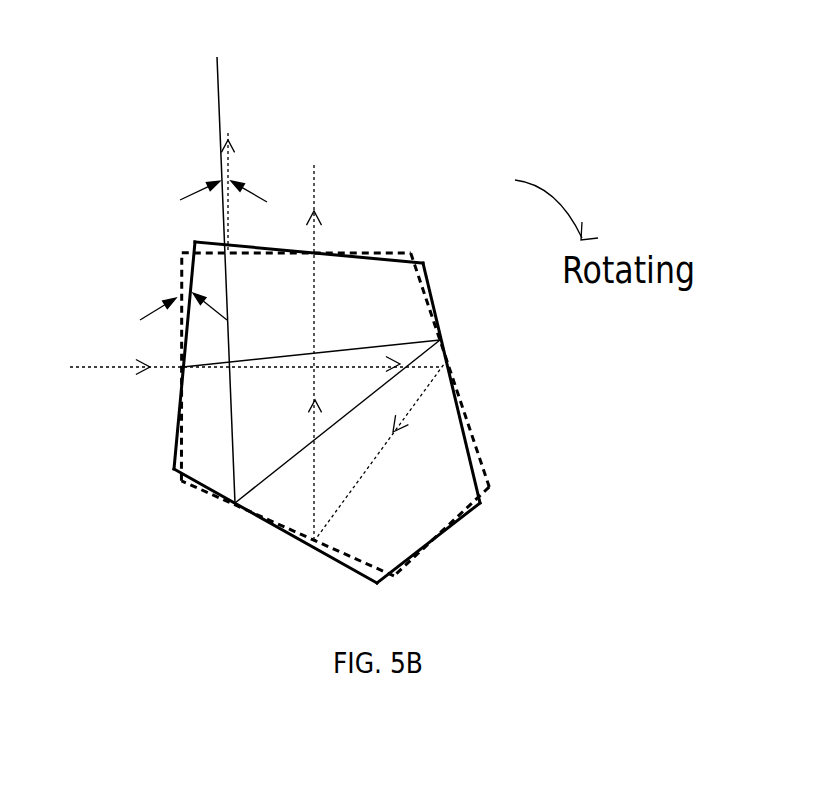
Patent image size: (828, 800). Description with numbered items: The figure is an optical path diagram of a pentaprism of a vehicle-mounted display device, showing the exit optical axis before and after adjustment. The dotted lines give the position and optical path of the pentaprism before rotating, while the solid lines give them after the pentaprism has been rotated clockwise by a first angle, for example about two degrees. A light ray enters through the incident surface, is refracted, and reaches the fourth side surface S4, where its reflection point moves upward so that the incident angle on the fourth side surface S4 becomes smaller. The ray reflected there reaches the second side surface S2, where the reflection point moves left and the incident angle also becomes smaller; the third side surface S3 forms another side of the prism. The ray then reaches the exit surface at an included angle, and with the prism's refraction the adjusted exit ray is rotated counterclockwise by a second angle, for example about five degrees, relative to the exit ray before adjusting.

The second side surface S2 is at (284, 528).
The third side surface S3 is at (451, 535).
The fourth side surface S4 is at (464, 375).